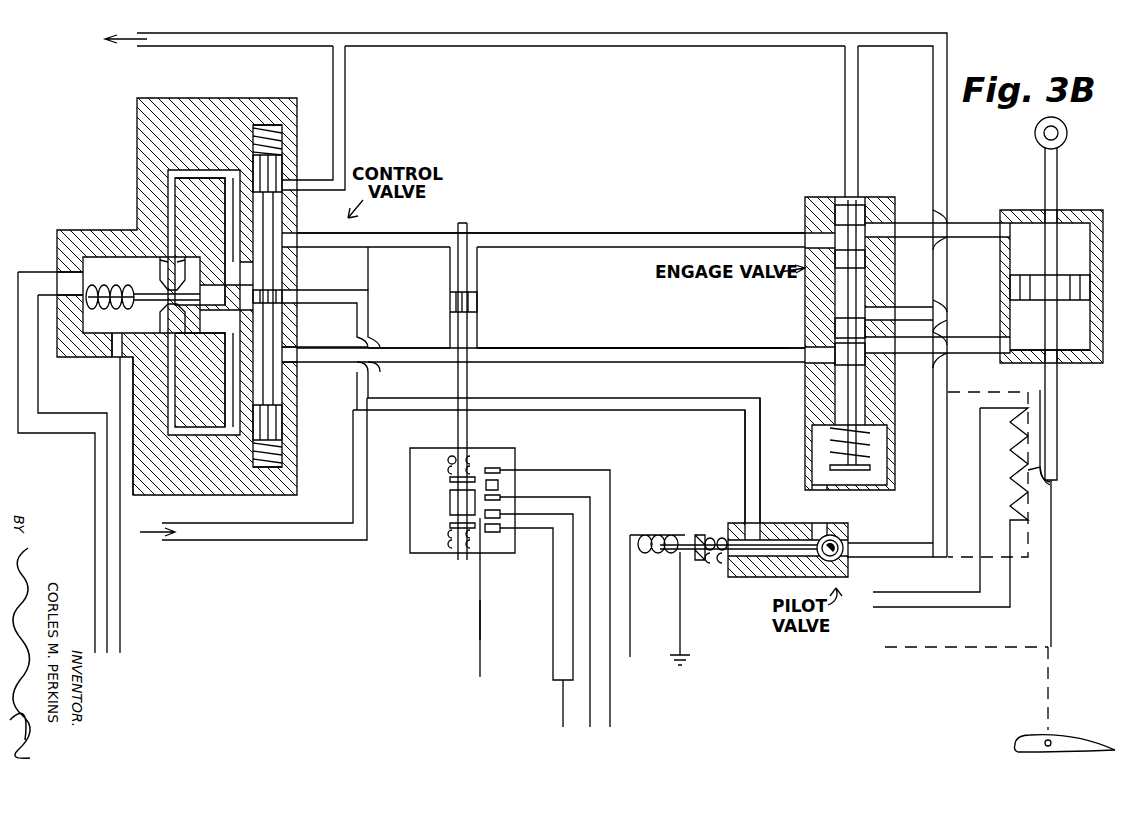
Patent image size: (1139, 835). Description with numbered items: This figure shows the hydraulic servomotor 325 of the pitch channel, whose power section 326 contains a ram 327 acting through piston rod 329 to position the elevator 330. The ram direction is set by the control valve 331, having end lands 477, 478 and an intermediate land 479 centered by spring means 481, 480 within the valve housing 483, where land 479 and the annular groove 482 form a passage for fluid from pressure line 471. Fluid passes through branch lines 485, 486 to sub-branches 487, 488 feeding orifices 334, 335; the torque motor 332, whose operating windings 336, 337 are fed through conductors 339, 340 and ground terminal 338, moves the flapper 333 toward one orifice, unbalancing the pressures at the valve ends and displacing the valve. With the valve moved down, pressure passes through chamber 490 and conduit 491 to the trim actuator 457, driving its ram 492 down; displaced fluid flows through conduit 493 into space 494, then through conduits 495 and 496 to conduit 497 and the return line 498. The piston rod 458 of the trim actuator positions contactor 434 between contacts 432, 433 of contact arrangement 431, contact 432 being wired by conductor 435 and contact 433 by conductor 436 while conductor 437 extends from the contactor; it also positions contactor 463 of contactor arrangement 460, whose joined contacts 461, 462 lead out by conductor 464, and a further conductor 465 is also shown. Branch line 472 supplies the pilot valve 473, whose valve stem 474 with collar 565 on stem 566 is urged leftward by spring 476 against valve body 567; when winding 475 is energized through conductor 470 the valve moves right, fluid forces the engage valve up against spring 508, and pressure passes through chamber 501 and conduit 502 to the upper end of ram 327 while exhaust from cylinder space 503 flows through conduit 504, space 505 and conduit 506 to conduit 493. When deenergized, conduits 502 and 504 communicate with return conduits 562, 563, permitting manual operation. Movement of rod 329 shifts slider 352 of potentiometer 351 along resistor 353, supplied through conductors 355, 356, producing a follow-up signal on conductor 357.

The fluid return line 498 is at (255, 36).
The conduit 497 is at (345, 125).
The return conduit 562 is at (858, 130).
The sub-branch 487 is at (168, 192).
The branch line 485 is at (232, 212).
The conduit 496 is at (238, 225).
The branch line 486 is at (232, 362).
The conduit 495 is at (240, 392).
The sub-branch 488 is at (168, 372).
The torque motor 332 is at (38, 271).
The operating winding 336 is at (110, 286).
The operating winding 337 is at (120, 280).
The flapper 333 is at (150, 304).
The orifice 334 is at (160, 274).
The orifice 335 is at (160, 318).
The control valve 331 is at (268, 212).
The spring means 481 is at (282, 135).
The end land 477 is at (282, 165).
The annular groove 482 is at (282, 300).
The end land 478 is at (282, 420).
The spring means 480 is at (282, 455).
The space 494 is at (282, 372).
The valve housing 483 is at (290, 392).
The chamber 490 is at (297, 252).
The intermediate land 479 is at (290, 295).
The conduit 491 is at (390, 233).
The hydraulic servomotor 325 is at (622, 199).
The ram 492 is at (450, 300).
The trim actuator 457 is at (522, 291).
The piston rod 458 is at (467, 328).
The space 505 is at (805, 347).
The conduit 493 is at (410, 365).
The conduit 506 is at (692, 348).
The pressure line 471 is at (288, 542).
The branch line 472 is at (662, 410).
The contact arrangement 431 is at (546, 464).
The conductor 437 is at (448, 484).
The contactor 463 is at (448, 520).
The contact 432 is at (500, 470).
The contactor 434 is at (498, 486).
The contact 433 is at (500, 497).
The contact 461 is at (500, 513).
The contact 462 is at (500, 528).
The conductor 435 is at (615, 482).
The conductor 436 is at (592, 512).
The conductor 464 is at (562, 704).
The contactor arrangement 460 is at (514, 557).
The wire 465 is at (480, 616).
The winding 475 is at (660, 536).
The conductor 470 is at (640, 625).
The valve stem 566 is at (670, 560).
The valve stem 474 is at (694, 531).
The collar 565 is at (705, 520).
The spring 476 is at (712, 565).
The pilot valve 473 is at (780, 578).
The valve body 567 is at (762, 510).
The chamber 501 is at (818, 220).
The return conduit 563 is at (902, 314).
The conduit 502 is at (968, 216).
The conduit 504 is at (975, 322).
The spring 508 is at (870, 440).
The ram 327 is at (1074, 260).
The power section 326 is at (1103, 240).
The cylinder space 503 is at (1072, 350).
The piston rod 329 is at (1057, 190).
The conductor 357 is at (1040, 412).
The adjustable slider 352 is at (1050, 490).
The potentiometer 351 is at (996, 382).
The resistor 353 is at (1018, 522).
The conductor 355 is at (926, 592).
The conductor 356 is at (935, 607).
The elevator 330 is at (1036, 735).
The conductor 340 is at (95, 600).
The conductor 339 is at (107, 618).
The ground terminal 338 is at (120, 640).